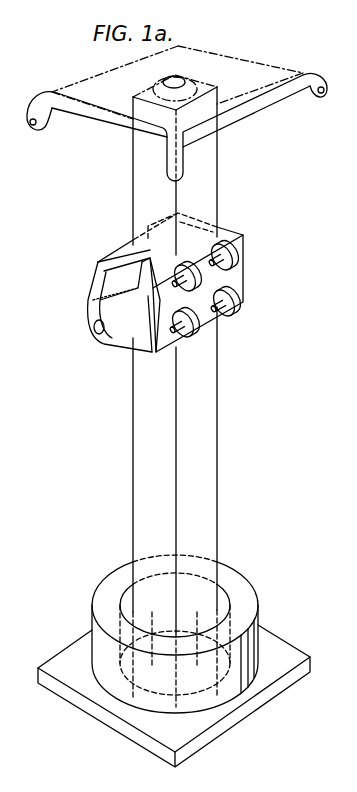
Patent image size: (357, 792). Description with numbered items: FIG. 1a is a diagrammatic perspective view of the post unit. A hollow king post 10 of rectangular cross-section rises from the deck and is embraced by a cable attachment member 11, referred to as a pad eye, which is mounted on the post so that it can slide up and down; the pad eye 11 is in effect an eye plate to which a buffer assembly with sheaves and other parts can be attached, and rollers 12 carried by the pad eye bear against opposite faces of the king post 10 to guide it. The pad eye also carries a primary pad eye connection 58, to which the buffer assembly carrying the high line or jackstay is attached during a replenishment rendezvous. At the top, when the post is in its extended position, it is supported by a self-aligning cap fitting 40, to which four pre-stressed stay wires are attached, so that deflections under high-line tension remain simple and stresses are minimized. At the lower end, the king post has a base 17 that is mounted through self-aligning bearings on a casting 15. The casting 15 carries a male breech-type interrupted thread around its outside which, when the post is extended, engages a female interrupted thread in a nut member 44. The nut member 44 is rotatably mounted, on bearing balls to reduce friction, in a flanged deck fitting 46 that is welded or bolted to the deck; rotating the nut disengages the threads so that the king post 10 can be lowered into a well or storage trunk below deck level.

The king post 10 is at (210, 430).
The cable attachment member 11 is at (243, 238).
The rollers 12 is at (138, 258).
The casting 15 is at (222, 605).
The base 17 is at (138, 572).
The self-aligning cap fitting 40 is at (225, 72).
The nut member 44 is at (245, 640).
The flanged deck fitting 46 is at (298, 637).
The primary pad eye connection 58 is at (117, 348).